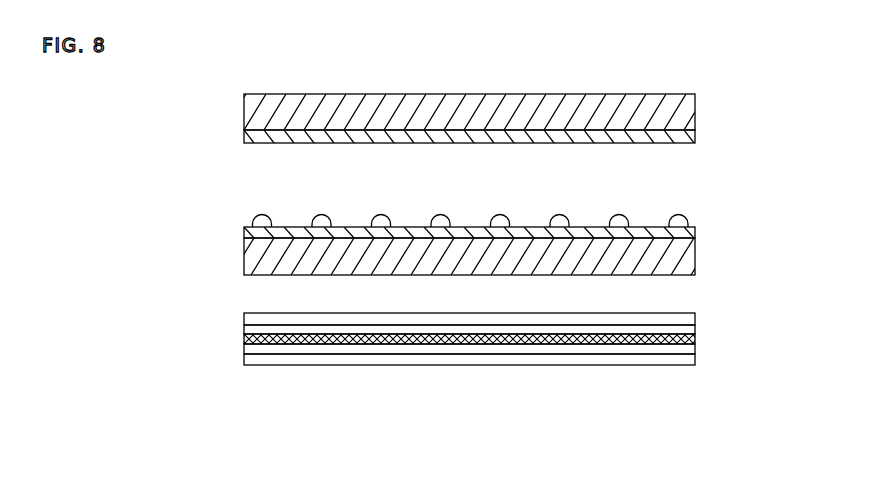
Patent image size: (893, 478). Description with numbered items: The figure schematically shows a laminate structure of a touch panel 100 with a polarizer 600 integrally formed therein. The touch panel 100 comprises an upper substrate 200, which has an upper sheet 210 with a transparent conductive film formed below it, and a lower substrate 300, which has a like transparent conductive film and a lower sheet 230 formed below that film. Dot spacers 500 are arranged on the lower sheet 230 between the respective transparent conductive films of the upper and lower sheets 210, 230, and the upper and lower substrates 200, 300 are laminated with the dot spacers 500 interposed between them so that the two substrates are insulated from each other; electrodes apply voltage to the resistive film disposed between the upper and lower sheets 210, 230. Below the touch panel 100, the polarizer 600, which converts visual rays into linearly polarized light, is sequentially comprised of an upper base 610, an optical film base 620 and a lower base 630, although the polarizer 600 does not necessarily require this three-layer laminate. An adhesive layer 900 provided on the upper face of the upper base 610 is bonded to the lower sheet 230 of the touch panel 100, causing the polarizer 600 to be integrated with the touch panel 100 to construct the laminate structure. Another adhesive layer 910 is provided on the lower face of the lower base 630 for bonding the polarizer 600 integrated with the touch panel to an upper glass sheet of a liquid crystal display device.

The touch panel 100 is at (118, 247).
The upper substrate 200 is at (211, 97).
The upper sheet 210 is at (685, 112).
The lower sheet 230 is at (688, 257).
The lower substrate 300 is at (211, 227).
The dot spacers 500 is at (685, 216).
The polarizer 600 is at (210, 312).
The upper base 610 is at (695, 328).
The optical film base 620 is at (695, 338).
The lower base 630 is at (695, 350).
The adhesive layer 900 is at (695, 317).
The adhesive layer 910 is at (695, 364).